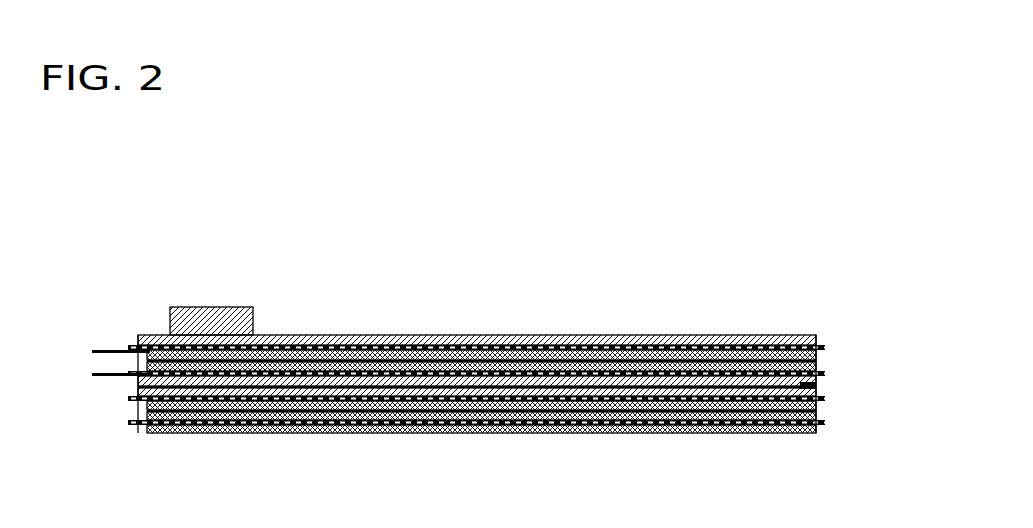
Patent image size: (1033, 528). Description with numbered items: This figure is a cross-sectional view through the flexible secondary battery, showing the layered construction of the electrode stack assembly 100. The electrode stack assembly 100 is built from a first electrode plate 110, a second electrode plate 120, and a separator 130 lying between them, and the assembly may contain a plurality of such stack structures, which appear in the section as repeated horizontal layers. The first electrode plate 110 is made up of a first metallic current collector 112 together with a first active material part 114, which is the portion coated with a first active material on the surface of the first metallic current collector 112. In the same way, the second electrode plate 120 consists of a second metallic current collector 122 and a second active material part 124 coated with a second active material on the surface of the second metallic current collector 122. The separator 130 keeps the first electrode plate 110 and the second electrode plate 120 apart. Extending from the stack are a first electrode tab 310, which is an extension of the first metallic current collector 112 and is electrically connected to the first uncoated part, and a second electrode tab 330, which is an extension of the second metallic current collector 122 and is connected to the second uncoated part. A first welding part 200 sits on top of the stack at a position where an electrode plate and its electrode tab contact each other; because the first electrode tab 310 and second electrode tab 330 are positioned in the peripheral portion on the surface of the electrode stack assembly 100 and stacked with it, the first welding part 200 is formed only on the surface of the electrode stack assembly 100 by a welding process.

The electrode stack assembly 100 is at (158, 292).
The first electrode plate 110 is at (535, 413).
The first metallic current collector 112 is at (817, 393).
The first active material part 114 is at (817, 422).
The second electrode plate 120 is at (487, 354).
The second metallic current collector 122 is at (817, 341).
The second active material part 124 is at (818, 366).
The separator 130 is at (817, 381).
The first welding part 200 is at (215, 307).
The first electrode tab 310 is at (92, 375).
The second electrode tab 330 is at (92, 352).